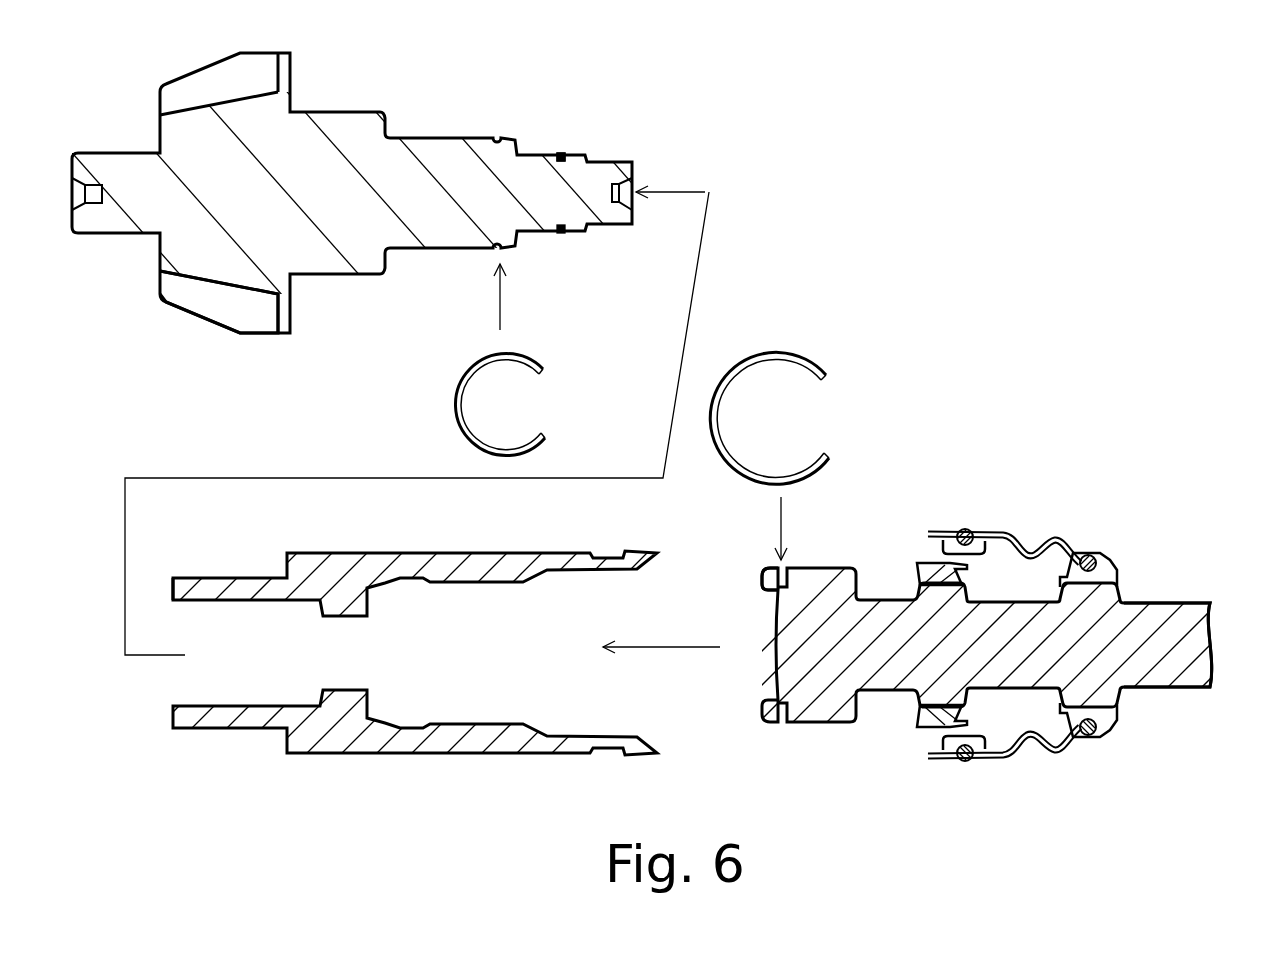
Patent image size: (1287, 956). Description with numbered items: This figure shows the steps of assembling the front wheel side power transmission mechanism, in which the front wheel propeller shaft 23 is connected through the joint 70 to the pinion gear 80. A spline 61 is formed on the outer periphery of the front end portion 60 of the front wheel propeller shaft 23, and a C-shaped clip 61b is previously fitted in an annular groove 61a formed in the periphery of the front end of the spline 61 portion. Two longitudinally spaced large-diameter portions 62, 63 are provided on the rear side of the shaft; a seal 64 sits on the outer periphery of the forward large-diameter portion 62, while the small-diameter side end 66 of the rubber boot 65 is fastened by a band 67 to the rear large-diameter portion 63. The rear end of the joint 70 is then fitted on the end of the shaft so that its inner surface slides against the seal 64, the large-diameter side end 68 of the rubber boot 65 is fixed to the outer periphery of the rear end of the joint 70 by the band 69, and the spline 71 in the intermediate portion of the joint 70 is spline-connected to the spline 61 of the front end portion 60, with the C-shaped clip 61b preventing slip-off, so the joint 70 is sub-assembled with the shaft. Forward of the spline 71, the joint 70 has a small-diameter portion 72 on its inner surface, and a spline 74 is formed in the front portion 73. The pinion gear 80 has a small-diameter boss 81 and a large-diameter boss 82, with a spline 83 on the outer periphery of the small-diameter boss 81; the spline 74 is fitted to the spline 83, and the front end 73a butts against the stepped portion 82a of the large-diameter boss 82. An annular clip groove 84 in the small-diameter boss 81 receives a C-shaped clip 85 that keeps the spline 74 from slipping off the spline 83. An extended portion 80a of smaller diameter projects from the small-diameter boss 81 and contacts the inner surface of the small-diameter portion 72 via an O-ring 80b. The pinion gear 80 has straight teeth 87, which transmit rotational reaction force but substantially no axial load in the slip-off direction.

The front wheel propeller shaft 23 is at (1182, 600).
The front end portion 60 is at (777, 650).
The spline 61 is at (808, 568).
The annular groove 61a is at (763, 586).
The C-shaped clip 61b is at (813, 358).
The large-diameter portion 62 is at (915, 695).
The large-diameter portion 63 is at (1110, 692).
The seal 64 is at (918, 563).
The rubber boot 65 is at (1022, 537).
The small-diameter side end 66 is at (1118, 557).
The band 67 is at (1087, 554).
The large-diameter side end 68 is at (938, 530).
The band 69 is at (967, 528).
The joint 70 is at (414, 549).
The spline 71 is at (485, 583).
The small-diameter portion 72 is at (340, 617).
The front portion 73 is at (242, 578).
The front end 73a is at (172, 585).
The spline 74 is at (227, 603).
The pinion gear 80 is at (419, 117).
The extended portion 80a is at (538, 148).
The O-ring 80b is at (562, 147).
The small-diameter boss 81 is at (440, 236).
The large-diameter boss 82 is at (330, 112).
The stepped portion 82a is at (383, 112).
The spline 83 is at (452, 138).
The annular clip groove 84 is at (498, 136).
The C-shaped clip 85 is at (528, 350).
The teeth 87 is at (203, 305).